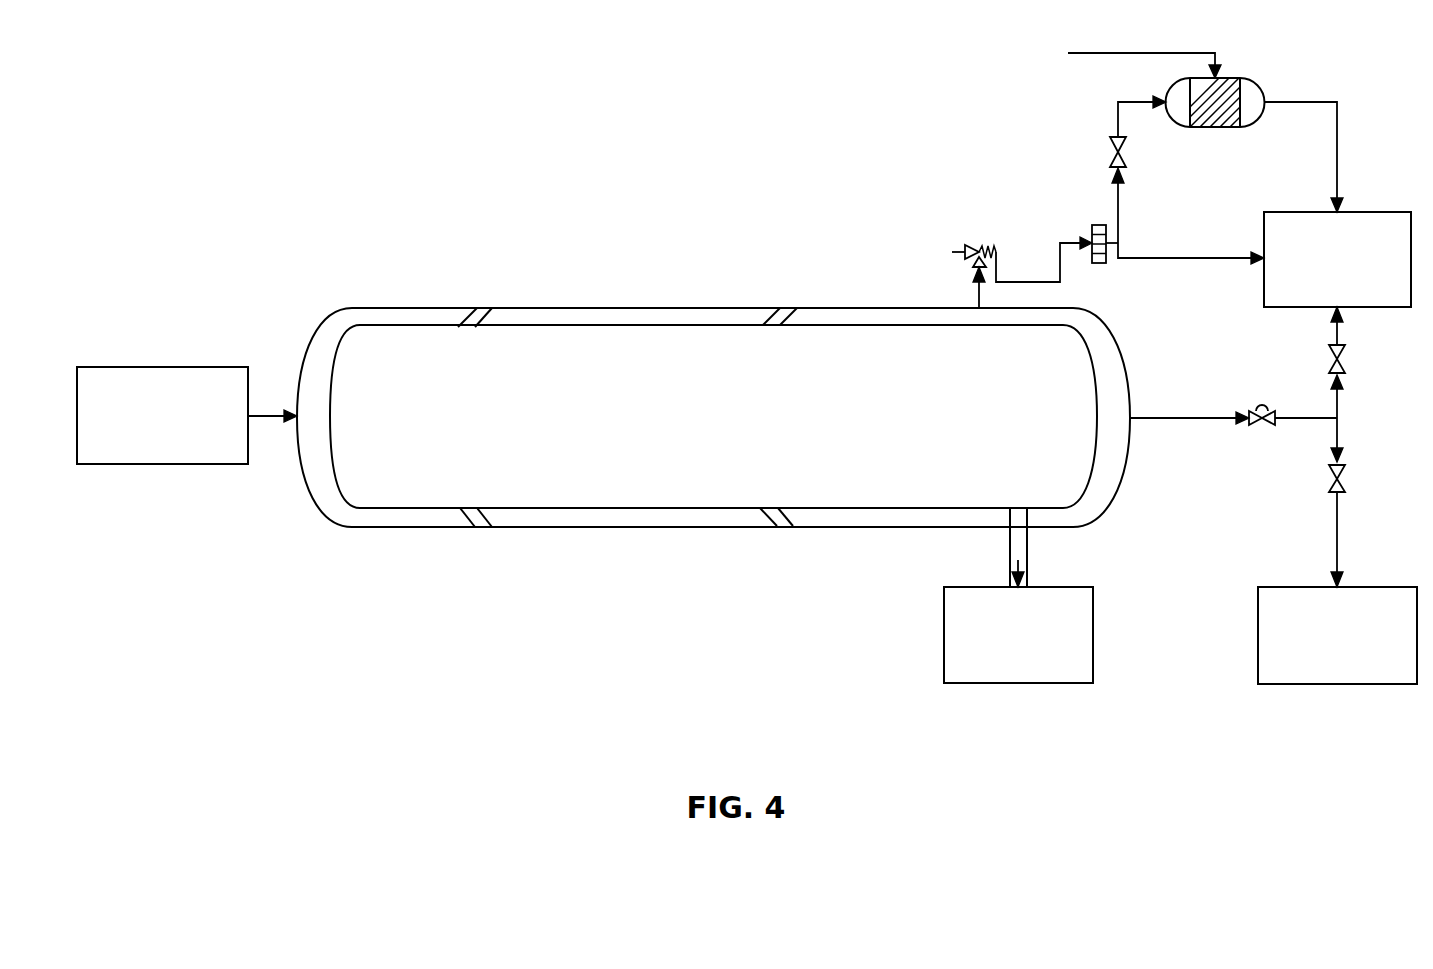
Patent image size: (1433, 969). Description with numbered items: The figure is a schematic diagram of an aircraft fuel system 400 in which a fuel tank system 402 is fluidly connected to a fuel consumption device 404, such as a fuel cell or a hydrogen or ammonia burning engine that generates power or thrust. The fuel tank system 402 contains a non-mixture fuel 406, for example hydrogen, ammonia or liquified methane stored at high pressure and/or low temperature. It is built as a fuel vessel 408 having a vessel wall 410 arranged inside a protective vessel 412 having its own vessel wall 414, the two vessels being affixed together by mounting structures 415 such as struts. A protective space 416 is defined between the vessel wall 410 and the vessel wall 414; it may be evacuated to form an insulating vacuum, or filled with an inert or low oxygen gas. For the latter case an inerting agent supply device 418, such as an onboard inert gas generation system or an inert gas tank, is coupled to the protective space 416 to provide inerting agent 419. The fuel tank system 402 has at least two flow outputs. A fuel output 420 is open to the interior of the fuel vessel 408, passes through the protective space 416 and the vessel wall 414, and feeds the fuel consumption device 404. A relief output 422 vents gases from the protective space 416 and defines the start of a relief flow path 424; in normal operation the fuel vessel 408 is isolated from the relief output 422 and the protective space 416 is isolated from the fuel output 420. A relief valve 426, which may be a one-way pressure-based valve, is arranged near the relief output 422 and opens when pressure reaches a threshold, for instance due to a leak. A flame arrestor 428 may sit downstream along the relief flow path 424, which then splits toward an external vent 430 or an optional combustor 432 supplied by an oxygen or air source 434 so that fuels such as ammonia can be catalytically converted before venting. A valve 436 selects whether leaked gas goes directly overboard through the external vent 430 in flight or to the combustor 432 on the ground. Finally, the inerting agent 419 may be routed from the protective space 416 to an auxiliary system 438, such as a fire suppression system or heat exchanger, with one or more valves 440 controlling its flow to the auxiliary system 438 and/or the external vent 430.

The aircraft fuel system 400 is at (175, 72).
The fuel tank system 402 is at (673, 207).
The fuel consumption device 404 is at (1018, 683).
The non-mixture fuel 406 is at (775, 432).
The fuel vessel 408 is at (888, 508).
The vessel wall 410 is at (895, 310).
The protective vessel 412 is at (615, 527).
The vessel wall 414 is at (598, 298).
The mounting structures 415 is at (477, 313).
The protective space 416 is at (307, 370).
The inerting agent supply device 418 is at (163, 367).
The inerting agent 419 is at (186, 433).
The fuel output 420 is at (1028, 542).
The relief output 422 is at (975, 306).
The relief flow path 424 is at (1185, 258).
The relief valve 426 is at (972, 243).
The flame arrestor 428 is at (1092, 226).
The external vent 430 is at (1385, 212).
The combustor 432 is at (1252, 92).
The oxygen or air source 434 is at (1063, 68).
The valve 436 is at (1111, 150).
The auxiliary system 438 is at (1337, 684).
The valves 440 is at (1343, 357).